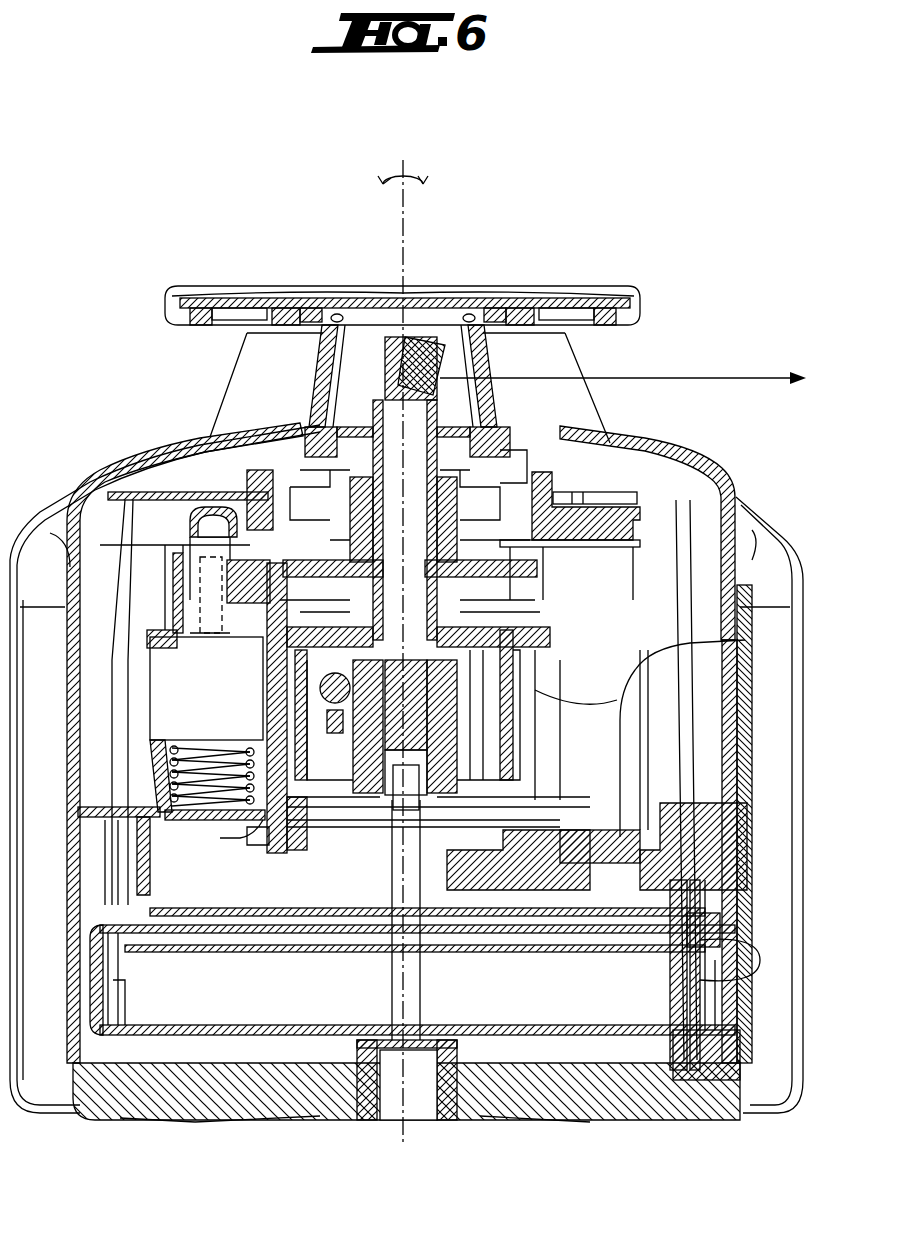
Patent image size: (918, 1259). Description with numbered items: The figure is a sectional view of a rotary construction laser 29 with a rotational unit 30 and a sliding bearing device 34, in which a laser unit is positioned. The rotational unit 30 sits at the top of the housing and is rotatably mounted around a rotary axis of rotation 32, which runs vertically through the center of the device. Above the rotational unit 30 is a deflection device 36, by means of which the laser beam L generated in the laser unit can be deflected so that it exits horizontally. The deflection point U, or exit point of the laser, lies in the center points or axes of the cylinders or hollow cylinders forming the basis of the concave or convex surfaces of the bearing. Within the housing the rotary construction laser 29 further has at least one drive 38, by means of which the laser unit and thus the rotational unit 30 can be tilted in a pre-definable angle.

The rotary construction laser 29 is at (148, 208).
The rotational unit 30 is at (498, 405).
The rotary axis of rotation 32 is at (400, 240).
The sliding bearing device 34 is at (502, 512).
The deflection device 36 is at (385, 362).
The drive 38 is at (229, 707).
The deflection point U is at (442, 356).
The laser beam L is at (665, 378).